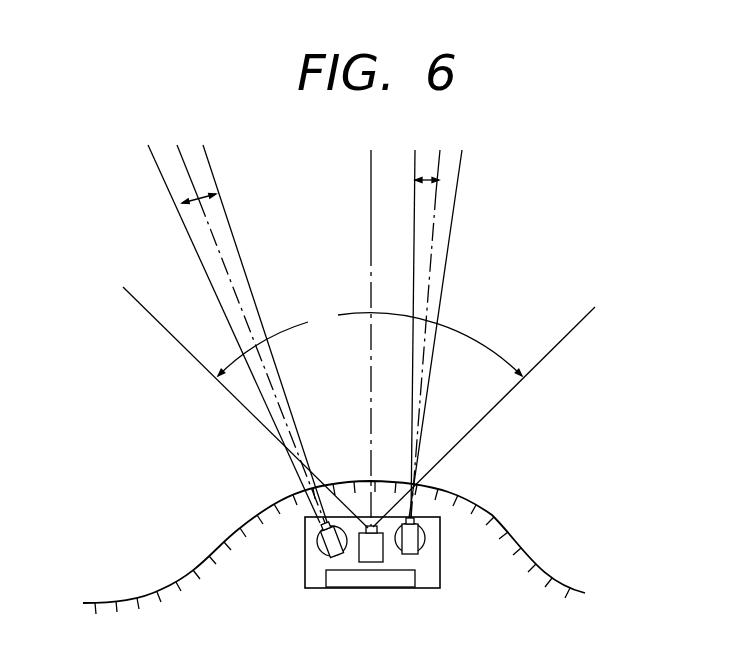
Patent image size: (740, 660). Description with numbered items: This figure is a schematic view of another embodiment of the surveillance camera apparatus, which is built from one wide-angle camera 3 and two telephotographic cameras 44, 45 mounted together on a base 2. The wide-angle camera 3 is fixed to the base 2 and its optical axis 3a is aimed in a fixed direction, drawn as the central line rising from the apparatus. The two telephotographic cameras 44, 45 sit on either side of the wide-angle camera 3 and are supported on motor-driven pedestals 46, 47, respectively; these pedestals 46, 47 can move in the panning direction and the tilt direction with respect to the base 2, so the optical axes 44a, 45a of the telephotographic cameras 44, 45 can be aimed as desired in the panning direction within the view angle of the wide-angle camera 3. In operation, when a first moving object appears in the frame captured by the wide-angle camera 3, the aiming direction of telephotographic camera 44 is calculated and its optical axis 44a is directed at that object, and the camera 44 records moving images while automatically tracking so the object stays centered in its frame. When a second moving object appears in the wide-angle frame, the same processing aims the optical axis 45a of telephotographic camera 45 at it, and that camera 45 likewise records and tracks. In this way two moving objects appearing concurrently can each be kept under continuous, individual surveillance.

The base 2 is at (425, 588).
The wide-angle camera 3 is at (376, 556).
The optical axis 3a is at (371, 192).
The telephotographic camera 44 is at (337, 555).
The optical axis 44a is at (190, 178).
The telephotographic camera 45 is at (412, 555).
The optical axis 45a is at (434, 240).
The motor-driven pedestal 46 is at (318, 541).
The motor-driven pedestal 47 is at (432, 533).